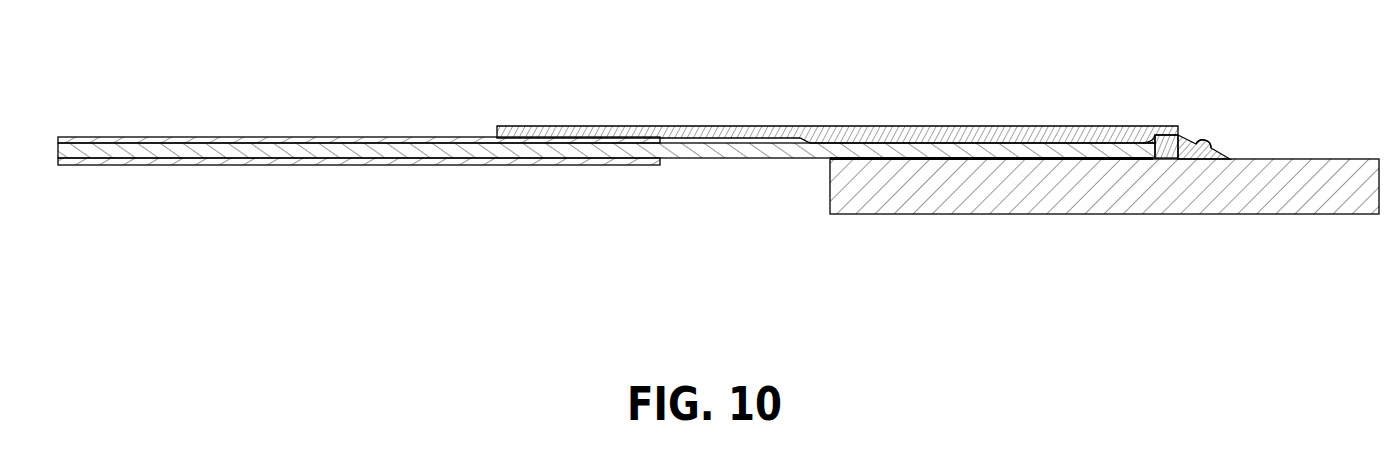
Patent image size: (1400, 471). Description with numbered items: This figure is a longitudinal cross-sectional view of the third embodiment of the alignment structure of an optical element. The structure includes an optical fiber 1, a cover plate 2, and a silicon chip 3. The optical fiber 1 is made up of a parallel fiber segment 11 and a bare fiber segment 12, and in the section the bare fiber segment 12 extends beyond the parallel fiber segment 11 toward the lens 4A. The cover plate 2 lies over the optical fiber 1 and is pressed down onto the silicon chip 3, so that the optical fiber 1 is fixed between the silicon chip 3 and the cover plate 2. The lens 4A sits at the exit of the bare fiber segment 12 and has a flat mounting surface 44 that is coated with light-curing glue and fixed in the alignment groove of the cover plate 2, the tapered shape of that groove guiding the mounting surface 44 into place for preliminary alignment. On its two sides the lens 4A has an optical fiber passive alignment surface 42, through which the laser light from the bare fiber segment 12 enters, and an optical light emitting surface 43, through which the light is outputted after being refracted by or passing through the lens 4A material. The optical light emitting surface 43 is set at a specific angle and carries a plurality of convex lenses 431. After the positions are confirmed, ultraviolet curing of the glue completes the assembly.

The optical fiber 1 is at (606, 225).
The parallel fiber segment 11 is at (600, 165).
The bare fiber segment 12 is at (690, 152).
The cover plate 2 is at (837, 127).
The silicon chip 3 is at (1123, 193).
The lens 4A is at (1190, 150).
The optical fiber passive alignment surface 42 is at (1142, 135).
The optical light emitting surface 43 is at (1228, 87).
The convex lenses 431 is at (1205, 138).
The mounting surface 44 is at (1163, 140).